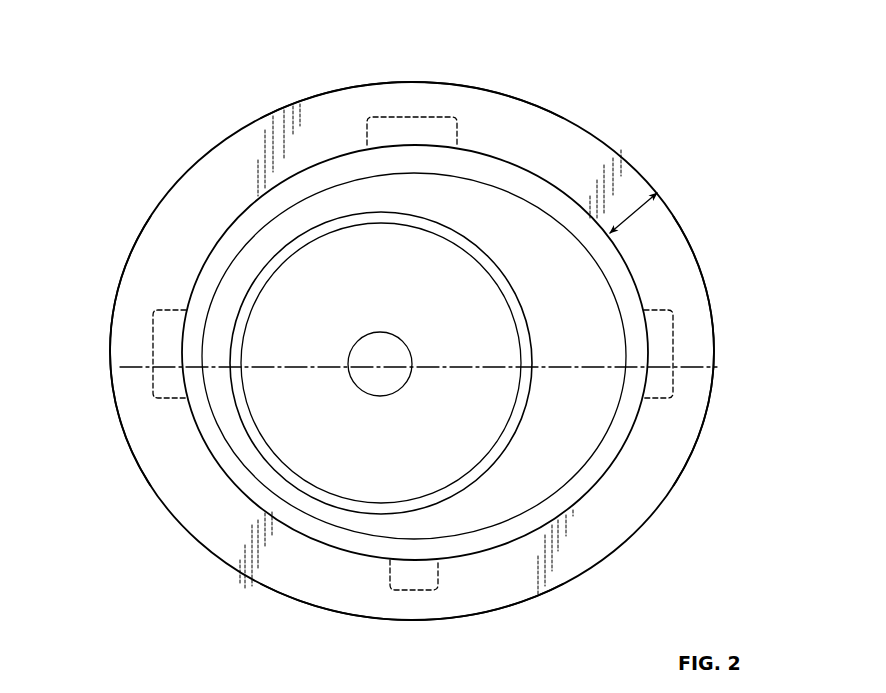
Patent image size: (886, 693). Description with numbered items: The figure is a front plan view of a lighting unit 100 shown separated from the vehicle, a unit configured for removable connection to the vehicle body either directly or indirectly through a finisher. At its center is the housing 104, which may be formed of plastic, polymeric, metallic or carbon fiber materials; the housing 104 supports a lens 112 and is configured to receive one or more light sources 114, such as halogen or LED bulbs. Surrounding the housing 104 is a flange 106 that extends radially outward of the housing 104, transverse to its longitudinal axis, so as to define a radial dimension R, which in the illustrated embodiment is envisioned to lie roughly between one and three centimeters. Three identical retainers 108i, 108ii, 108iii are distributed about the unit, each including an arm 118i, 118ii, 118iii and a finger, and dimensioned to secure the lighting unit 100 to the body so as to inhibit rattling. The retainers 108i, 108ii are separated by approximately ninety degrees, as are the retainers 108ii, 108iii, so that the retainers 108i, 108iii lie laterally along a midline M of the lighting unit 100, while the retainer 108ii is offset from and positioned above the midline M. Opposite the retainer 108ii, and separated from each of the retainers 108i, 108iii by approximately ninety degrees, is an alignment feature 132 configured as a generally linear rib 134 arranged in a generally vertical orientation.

The lighting unit 100 is at (663, 110).
The housing 104 is at (195, 273).
The flange 106 is at (207, 190).
The retainer 108i is at (143, 412).
The retainer 108ii is at (487, 110).
The retainer 108iii is at (695, 347).
The lens 112 is at (590, 295).
The light source 114 is at (480, 417).
The arm 118i is at (147, 317).
The arm 118ii is at (425, 110).
The arm 118iii is at (677, 313).
The alignment feature 132 is at (382, 587).
The rib 134 is at (418, 580).
The midline M is at (314, 360).
The radial dimension R is at (633, 213).